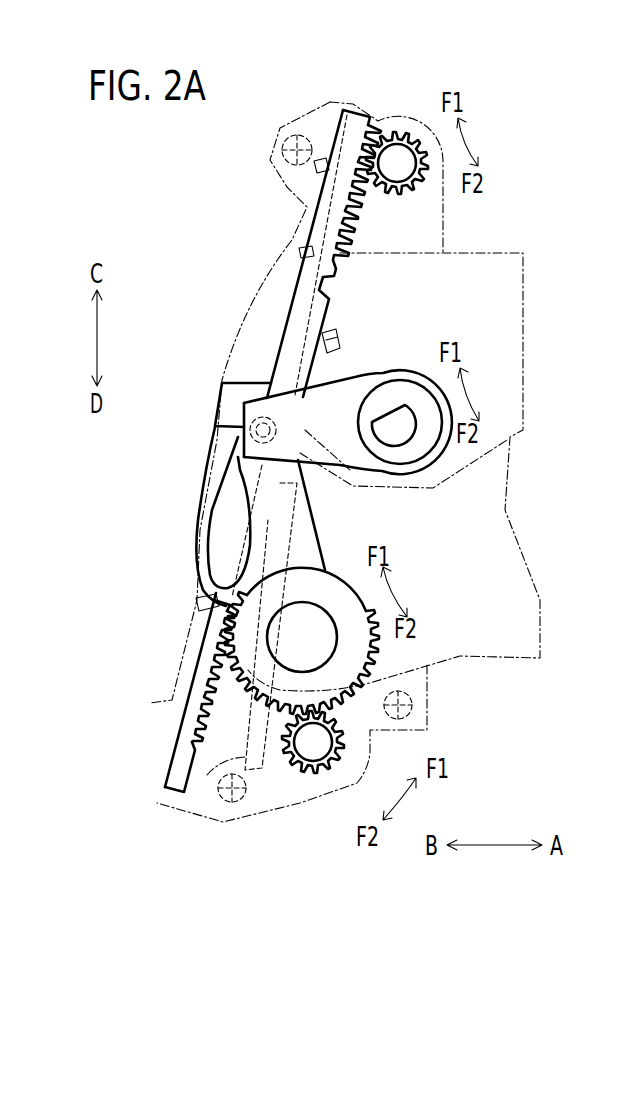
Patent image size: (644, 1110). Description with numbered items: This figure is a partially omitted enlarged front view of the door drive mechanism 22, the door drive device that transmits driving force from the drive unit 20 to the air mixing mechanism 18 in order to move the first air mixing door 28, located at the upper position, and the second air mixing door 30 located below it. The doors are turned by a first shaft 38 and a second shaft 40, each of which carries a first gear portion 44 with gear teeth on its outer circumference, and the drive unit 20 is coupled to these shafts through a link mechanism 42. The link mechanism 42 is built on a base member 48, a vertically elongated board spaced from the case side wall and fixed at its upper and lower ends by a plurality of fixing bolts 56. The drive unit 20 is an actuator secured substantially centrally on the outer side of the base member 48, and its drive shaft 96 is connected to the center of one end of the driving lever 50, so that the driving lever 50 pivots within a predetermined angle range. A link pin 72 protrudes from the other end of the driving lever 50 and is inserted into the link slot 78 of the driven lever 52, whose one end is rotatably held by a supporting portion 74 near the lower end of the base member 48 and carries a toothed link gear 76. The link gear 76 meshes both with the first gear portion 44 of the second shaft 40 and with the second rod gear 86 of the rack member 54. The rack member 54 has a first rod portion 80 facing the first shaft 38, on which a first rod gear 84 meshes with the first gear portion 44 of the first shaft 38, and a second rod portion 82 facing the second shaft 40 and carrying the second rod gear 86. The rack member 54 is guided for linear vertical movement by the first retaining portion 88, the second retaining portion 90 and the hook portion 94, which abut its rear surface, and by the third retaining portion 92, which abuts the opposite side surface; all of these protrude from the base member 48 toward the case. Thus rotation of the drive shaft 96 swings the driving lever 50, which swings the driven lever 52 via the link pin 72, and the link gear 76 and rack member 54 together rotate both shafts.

The air mixing mechanism 18 is at (318, 507).
The drive unit 20 is at (500, 307).
The door drive mechanism 22 is at (476, 236).
The first air mixing door 28 is at (300, 357).
The second air mixing door 30 is at (214, 780).
The first shaft 38 is at (415, 122).
The second shaft 40 is at (307, 787).
The link mechanism 42 is at (180, 537).
The first gear portion 44 is at (393, 140).
The base member 48 is at (515, 627).
The driving lever 50 is at (402, 360).
The driven lever 52 is at (343, 539).
The rack member 54 is at (265, 326).
The fixing bolt 56 is at (290, 133).
The link pin 72 is at (243, 432).
The supporting portion 74 is at (315, 627).
The link gear 76 is at (372, 668).
The link slot 78 is at (227, 503).
The first rod portion 80 is at (365, 125).
The second rod portion 82 is at (185, 755).
The first rod gear 84 is at (352, 247).
The second rod gear 86 is at (210, 700).
The first retaining portion 88 is at (317, 170).
The second retaining portion 90 is at (205, 603).
The third retaining portion 92 is at (337, 337).
The hook portion 94 is at (303, 252).
The drive shaft 96 is at (408, 428).